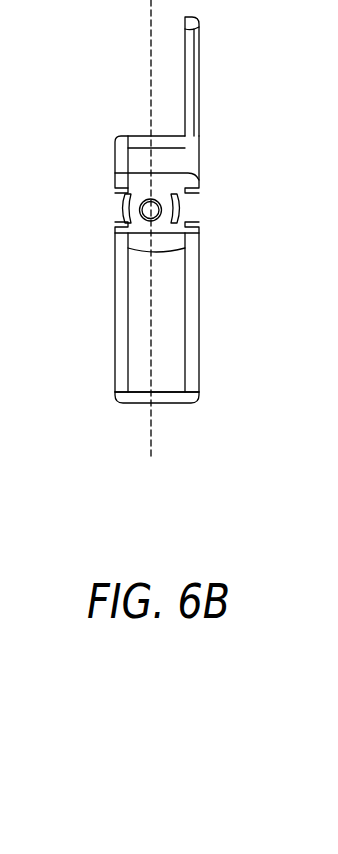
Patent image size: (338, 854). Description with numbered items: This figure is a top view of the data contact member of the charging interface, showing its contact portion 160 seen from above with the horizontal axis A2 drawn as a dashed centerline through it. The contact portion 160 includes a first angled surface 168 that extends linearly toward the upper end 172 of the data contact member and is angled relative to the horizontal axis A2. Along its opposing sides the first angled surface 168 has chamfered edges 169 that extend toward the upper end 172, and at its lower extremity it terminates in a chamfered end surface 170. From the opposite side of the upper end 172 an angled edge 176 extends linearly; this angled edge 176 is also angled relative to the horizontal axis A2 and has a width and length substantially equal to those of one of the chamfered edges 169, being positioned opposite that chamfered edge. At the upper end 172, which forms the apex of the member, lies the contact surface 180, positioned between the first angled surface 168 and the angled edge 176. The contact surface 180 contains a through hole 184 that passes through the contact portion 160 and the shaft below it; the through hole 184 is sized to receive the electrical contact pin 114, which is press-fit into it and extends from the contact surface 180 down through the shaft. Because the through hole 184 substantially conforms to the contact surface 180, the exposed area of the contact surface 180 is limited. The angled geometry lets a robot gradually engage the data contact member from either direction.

The horizontal axis A2 is at (150, 88).
The angled edge 176 is at (190, 95).
The upper end 172 is at (232, 189).
The electrical contact pin 114 is at (139, 209).
The contact surface 180 is at (122, 210).
The through hole 184 is at (162, 209).
The contact portion 160 is at (183, 344).
The chamfered edges 169 is at (115, 312).
The first angled surface 168 is at (162, 350).
The chamfered end surface 170 is at (139, 397).